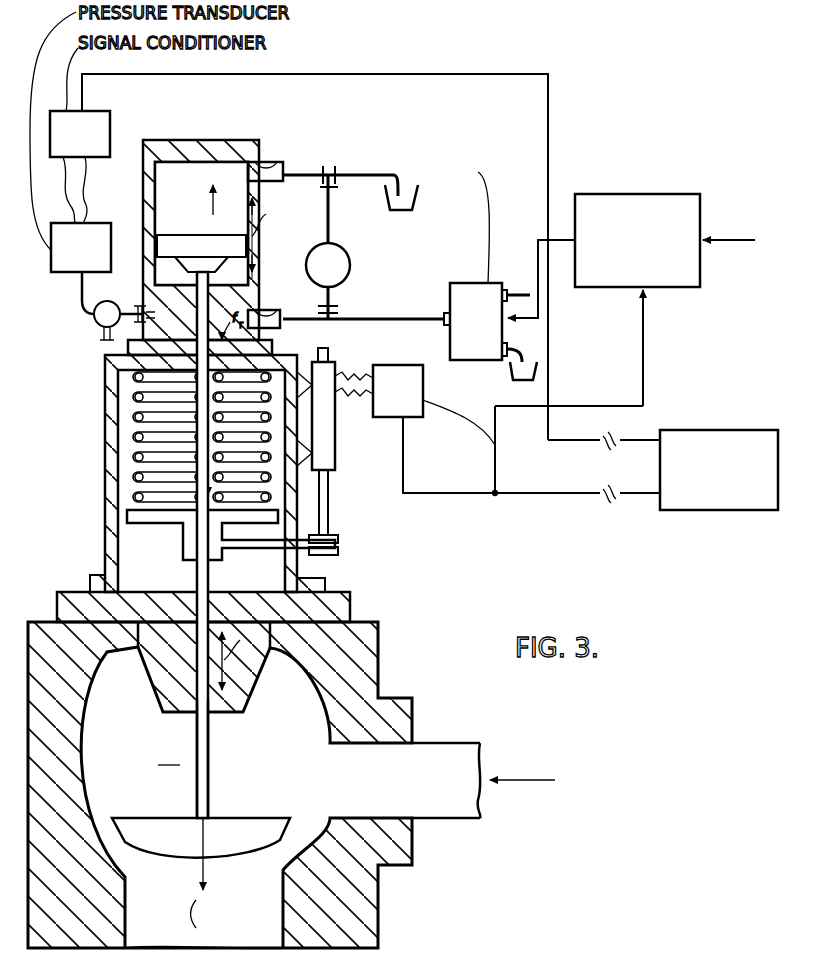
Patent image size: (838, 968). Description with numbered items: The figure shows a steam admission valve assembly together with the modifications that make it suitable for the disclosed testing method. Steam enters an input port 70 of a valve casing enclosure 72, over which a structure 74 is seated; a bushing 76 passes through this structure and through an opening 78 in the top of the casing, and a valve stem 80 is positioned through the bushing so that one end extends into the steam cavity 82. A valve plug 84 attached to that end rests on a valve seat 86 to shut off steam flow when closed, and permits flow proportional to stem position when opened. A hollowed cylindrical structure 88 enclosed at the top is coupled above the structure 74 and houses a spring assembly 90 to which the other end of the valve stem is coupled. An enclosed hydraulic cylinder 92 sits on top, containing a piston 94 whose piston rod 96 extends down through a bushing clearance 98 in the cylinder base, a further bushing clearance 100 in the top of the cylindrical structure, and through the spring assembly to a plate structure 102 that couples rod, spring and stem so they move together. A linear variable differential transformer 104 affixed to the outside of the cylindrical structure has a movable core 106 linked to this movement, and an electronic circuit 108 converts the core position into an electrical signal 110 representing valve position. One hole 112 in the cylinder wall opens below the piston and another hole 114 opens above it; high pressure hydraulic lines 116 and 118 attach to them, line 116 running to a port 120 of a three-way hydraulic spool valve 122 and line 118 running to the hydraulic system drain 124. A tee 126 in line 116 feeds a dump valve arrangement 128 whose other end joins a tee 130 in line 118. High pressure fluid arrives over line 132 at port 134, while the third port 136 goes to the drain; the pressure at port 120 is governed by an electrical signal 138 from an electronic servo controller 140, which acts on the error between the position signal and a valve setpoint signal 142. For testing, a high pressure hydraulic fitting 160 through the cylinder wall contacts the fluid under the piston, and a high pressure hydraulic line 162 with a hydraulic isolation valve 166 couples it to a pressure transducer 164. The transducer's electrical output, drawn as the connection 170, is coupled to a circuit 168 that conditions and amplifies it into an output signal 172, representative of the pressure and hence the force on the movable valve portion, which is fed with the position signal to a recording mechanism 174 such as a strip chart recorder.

The input port 70 is at (460, 800).
The valve casing enclosure 72 is at (54, 632).
The structure 74 is at (340, 606).
The bushing 76 is at (210, 592).
The opening 78 is at (140, 660).
The valve stem 80 is at (208, 762).
The steam cavity 82 is at (169, 756).
The valve plug 84 is at (175, 826).
The valve seat 86 is at (125, 870).
The hollowed cylindrical structure 88 is at (110, 486).
The spring assembly 90 is at (134, 420).
The hydraulic cylinder 92 is at (205, 140).
The piston 94 is at (195, 240).
The piston rod 96 is at (225, 292).
The bushing clearance 98 is at (146, 306).
The bushing clearance 100 is at (150, 384).
The plate structure 102 is at (178, 526).
The linear variable differential transformer 104 is at (335, 455).
The movable core 106 is at (330, 504).
The electronic circuit 108 is at (410, 417).
The electrical signal 110 is at (462, 494).
The hole 112 is at (268, 310).
The hole 114 is at (260, 163).
The high pressure hydraulic line 116 is at (377, 319).
The high pressure hydraulic line 118 is at (312, 170).
The port 120 is at (446, 322).
The three-way hydraulic spool valve 122 is at (482, 283).
The hydraulic system drain 124 is at (410, 198).
The tee 126 is at (330, 320).
The dump valve arrangement 128 is at (348, 268).
The tee 130 is at (330, 166).
The line 132 is at (538, 300).
The port 134 is at (508, 290).
The third port 136 is at (508, 356).
The electrical signal 138 is at (538, 328).
The electronic servo controller 140 is at (658, 194).
The valve setpoint signal 142 is at (722, 242).
The high pressure hydraulic fitting 160 is at (120, 305).
The high pressure hydraulic line 162 is at (130, 343).
The pressure transducer 164 is at (66, 272).
The hydraulic isolation valve 166 is at (94, 316).
The circuit 168 is at (110, 120).
The transducer wiring 170 is at (84, 192).
The output signal 172 is at (348, 74).
The recording mechanism 174 is at (724, 430).